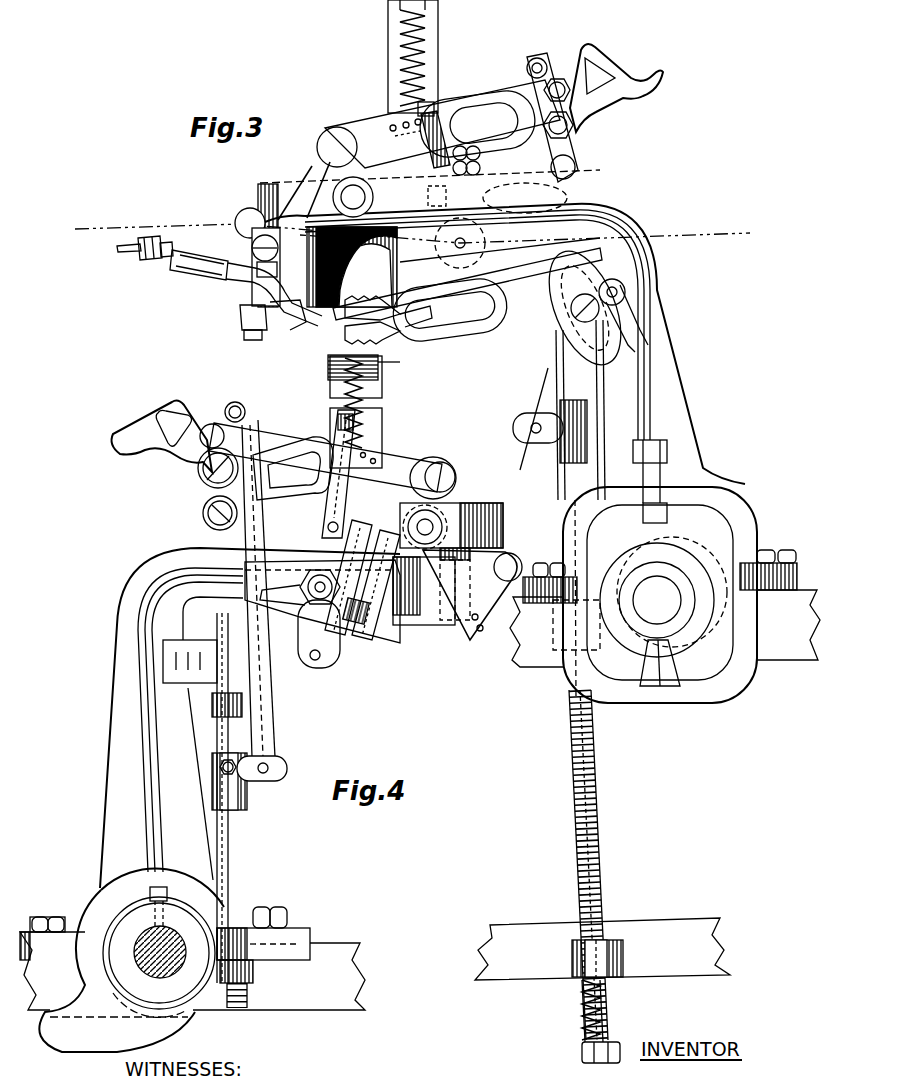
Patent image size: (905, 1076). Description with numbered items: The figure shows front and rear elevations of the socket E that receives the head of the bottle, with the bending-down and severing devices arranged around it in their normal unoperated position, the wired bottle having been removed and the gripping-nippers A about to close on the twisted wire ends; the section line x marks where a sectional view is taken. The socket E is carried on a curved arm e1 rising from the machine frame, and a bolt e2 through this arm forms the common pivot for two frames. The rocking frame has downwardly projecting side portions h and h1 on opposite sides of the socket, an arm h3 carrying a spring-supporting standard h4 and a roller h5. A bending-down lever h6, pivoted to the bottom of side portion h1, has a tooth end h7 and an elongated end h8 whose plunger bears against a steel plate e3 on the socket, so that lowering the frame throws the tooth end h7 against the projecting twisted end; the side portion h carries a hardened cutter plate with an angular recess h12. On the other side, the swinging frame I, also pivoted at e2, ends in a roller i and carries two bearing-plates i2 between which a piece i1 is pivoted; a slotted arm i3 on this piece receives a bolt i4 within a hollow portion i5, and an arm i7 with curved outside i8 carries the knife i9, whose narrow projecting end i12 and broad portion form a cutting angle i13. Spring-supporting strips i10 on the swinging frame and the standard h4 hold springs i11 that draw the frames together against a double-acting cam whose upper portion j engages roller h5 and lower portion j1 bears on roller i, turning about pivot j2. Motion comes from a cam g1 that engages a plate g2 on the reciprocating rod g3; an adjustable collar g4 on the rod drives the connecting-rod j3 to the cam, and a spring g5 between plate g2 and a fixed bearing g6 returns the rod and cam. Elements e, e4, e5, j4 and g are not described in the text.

In FIG. 3, the section line x is at (410, 230).
In FIG. 3, the spring-supporting standard h4 is at (413, 56).
In FIG. 4, the spring-supporting standard h4 is at (382, 418).
In FIG. 3, the springs i11 is at (415, 97).
In FIG. 3, the arm h3 is at (438, 124).
In FIG. 4, the arm h3 is at (332, 461).
In FIG. 3, the bolt i4 is at (450, 143).
In FIG. 3, the lower curved portion of the double-acting cam j1 is at (492, 150).
In FIG. 4, the lower curved portion of the double-acting cam j1 is at (290, 450).
In FIG. 3, the pivot pin j4 is at (541, 51).
In FIG. 4, the pivot pin j4 is at (244, 400).
In FIG. 3, the roller h5 is at (560, 71).
In FIG. 4, the roller h5 is at (210, 420).
In FIG. 3, the upper curved portion of the double-acting cam j is at (595, 105).
In FIG. 4, the upper curved portion of the double-acting cam j is at (162, 424).
In FIG. 3, the curved arm e1 is at (505, 323).
In FIG. 4, the curved arm e1 is at (250, 718).
In FIG. 3, the pivot bolt e2 is at (429, 238).
In FIG. 4, the pivot bolt e2 is at (451, 531).
In FIG. 3, the stud e4 is at (415, 198).
In FIG. 3, the side portion of rocking frame h1 is at (275, 249).
In FIG. 3, the socket E is at (352, 267).
In FIG. 4, the socket E is at (424, 591).
In FIG. 3, the clamp body e is at (365, 275).
In FIG. 4, the clamp body e is at (428, 590).
In FIG. 3, the slotted arm i3 is at (451, 277).
In FIG. 3, the gripping-nippers A is at (419, 327).
In FIG. 3, the jaws e5 is at (377, 315).
In FIG. 3, the elongated end h8 is at (172, 266).
In FIG. 3, the bending-down lever h6 is at (243, 281).
In FIG. 3, the steel plate e3 is at (280, 310).
In FIG. 3, the tooth end h7 is at (305, 318).
In FIG. 3, the connecting-rod j3 is at (584, 355).
In FIG. 4, the connecting-rod j3 is at (260, 645).
In FIG. 3, the adjustable collar g4 is at (558, 448).
In FIG. 4, the adjustable collar g4 is at (245, 796).
In FIG. 3, the shaft bearing g is at (660, 571).
In FIG. 4, the shaft bearing g is at (180, 955).
In FIG. 3, the spring g5 is at (603, 800).
In FIG. 4, the spring g5 is at (248, 994).
In FIG. 3, the reciprocally-moving rod g3 is at (596, 748).
In FIG. 4, the reciprocally-moving rod g3 is at (230, 848).
In FIG. 3, the fixed bearing g6 is at (623, 958).
In FIG. 4, the pivotal point of the double-acting cam j2 is at (200, 474).
In FIG. 4, the roller i is at (204, 512).
In FIG. 4, the spring-supporting strips i10 is at (338, 474).
In FIG. 4, the swinging frame I is at (322, 590).
In FIG. 4, the bearing-plates i2 is at (420, 527).
In FIG. 4, the side portion of rocking frame h is at (472, 595).
In FIG. 4, the angular recess h12 is at (472, 638).
In FIG. 4, the pivoted piece i1 is at (334, 632).
In FIG. 4, the curved outside of arm i8 is at (348, 640).
In FIG. 4, the arm i7 is at (365, 640).
In FIG. 4, the cutter or knife i9 is at (388, 640).
In FIG. 4, the cutting angle i13 is at (412, 632).
In FIG. 4, the narrow projecting end of knife i12 is at (436, 640).
In FIG. 4, the hollow portion i5 is at (300, 598).
In FIG. 4, the cam g1 is at (131, 960).
In FIG. 4, the plate g2 is at (310, 935).